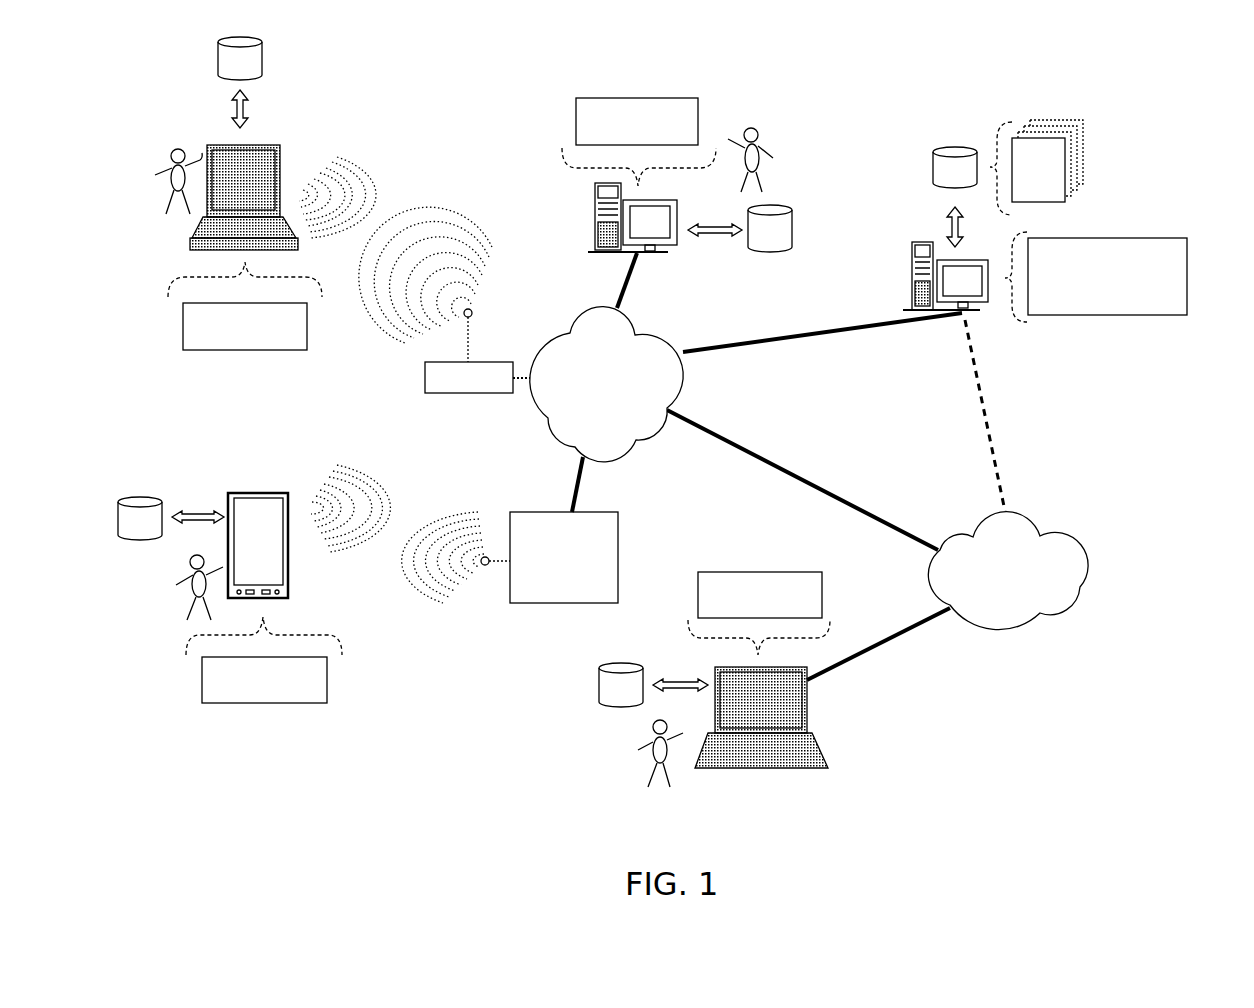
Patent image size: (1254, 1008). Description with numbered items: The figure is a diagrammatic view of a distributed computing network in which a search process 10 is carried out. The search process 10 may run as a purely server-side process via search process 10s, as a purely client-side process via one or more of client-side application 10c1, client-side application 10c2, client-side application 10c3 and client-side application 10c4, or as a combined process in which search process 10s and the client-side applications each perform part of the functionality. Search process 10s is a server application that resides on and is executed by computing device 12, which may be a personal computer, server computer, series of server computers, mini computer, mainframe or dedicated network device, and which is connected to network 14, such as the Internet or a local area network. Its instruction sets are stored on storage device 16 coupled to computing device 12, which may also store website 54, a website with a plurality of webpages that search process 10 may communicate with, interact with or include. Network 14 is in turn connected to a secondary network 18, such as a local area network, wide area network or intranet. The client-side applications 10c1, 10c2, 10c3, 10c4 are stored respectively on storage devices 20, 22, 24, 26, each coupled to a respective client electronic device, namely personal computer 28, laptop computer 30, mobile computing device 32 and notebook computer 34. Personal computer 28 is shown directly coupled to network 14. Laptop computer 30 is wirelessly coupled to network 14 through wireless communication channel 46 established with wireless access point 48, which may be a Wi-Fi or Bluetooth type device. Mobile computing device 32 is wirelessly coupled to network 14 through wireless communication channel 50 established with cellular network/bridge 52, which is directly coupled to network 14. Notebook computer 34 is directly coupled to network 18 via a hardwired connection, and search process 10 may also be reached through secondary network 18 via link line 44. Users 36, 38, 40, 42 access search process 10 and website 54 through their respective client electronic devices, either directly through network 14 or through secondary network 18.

The search process 10 is at (964, 95).
The client-side application 10c1 is at (698, 124).
The client-side application 10c2 is at (307, 328).
The client-side application 10c3 is at (327, 680).
The client-side application 10c4 is at (822, 590).
The search process 10s is at (1187, 278).
The computing device 12 is at (912, 255).
The network 14 is at (606, 384).
The storage device 16 is at (955, 197).
The network 18 is at (1008, 571).
The storage device 20 is at (740, 228).
The storage device 22 is at (240, 82).
The storage device 24 is at (171, 518).
The storage device 26 is at (653, 685).
The personal computer 28 is at (678, 216).
The laptop computer 30 is at (280, 167).
The mobile computing device 32 is at (297, 545).
The notebook computer 34 is at (807, 709).
The user 36 is at (768, 142).
The user 38 is at (145, 172).
The user 40 is at (180, 570).
The user 42 is at (627, 745).
The link line 44 is at (413, 213).
The wireless communication channel 46 is at (405, 512).
The wireless access point 48 is at (424, 379).
The wireless communication channel 50 is at (618, 526).
The cellular network/bridge 52 is at (957, 416).
The website 54 is at (1086, 147).